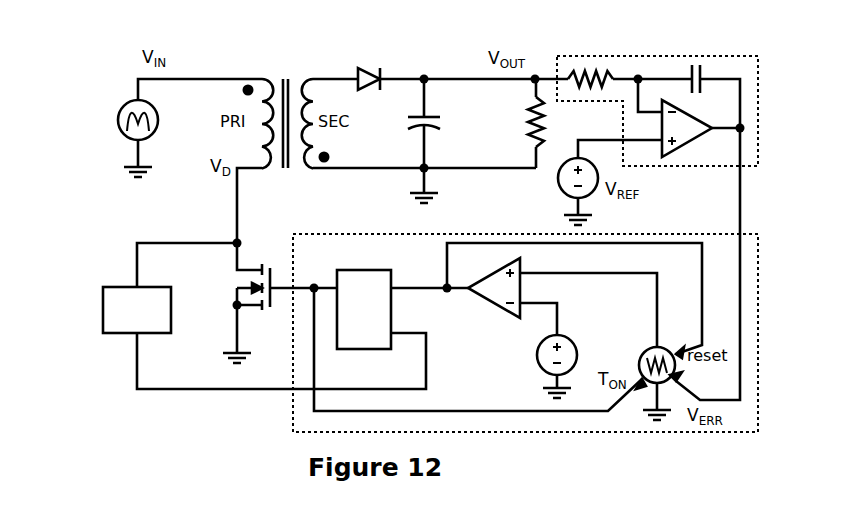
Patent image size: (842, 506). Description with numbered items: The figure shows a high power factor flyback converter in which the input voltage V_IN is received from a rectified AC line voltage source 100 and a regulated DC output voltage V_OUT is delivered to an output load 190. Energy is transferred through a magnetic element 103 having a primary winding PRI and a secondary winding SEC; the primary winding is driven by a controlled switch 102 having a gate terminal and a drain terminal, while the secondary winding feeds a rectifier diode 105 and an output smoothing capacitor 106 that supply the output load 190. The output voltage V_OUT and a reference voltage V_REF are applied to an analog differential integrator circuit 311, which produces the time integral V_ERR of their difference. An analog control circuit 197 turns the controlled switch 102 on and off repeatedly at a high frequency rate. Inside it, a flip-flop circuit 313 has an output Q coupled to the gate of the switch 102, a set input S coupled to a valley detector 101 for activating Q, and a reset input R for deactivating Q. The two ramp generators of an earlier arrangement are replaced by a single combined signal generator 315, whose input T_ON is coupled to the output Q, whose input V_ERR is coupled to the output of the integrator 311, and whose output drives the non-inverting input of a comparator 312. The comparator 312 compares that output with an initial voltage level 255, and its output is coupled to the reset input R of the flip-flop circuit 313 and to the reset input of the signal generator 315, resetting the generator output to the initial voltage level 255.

The rectified AC line voltage source 100 is at (123, 100).
The valley detector 101 is at (123, 286).
The controlled switch 102 is at (229, 287).
The magnetic element 103 is at (275, 74).
The rectifier diode 105 is at (369, 66).
The output smoothing capacitor 106 is at (443, 126).
The output load 190 is at (518, 124).
The control circuit 197 is at (330, 233).
The initial voltage level 255 is at (531, 355).
The analog differential integrator circuit 311 is at (703, 168).
The comparator 312 is at (481, 300).
The flip-flop circuit 313 is at (355, 268).
The combined signal generator 315 is at (645, 348).